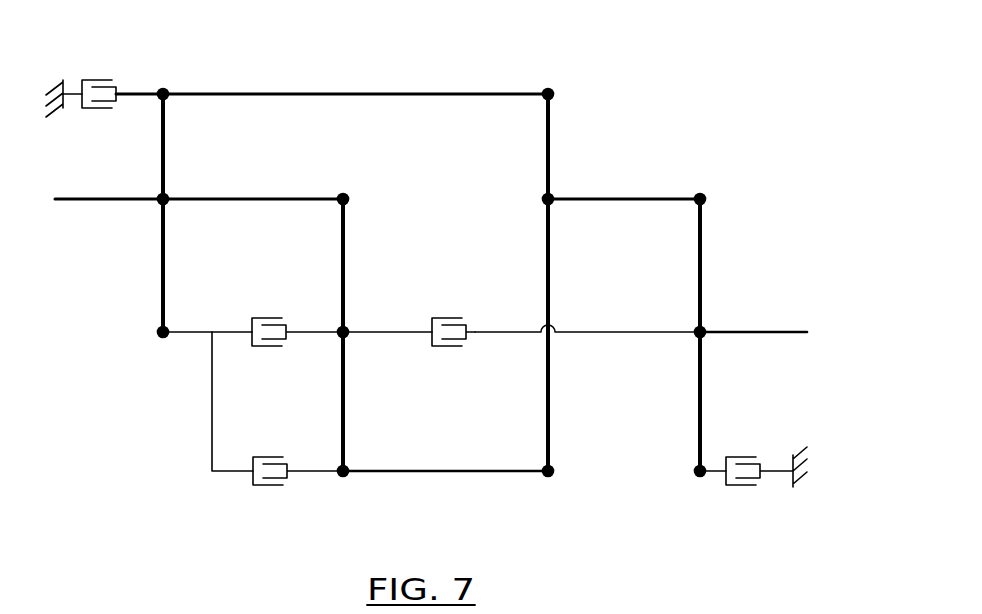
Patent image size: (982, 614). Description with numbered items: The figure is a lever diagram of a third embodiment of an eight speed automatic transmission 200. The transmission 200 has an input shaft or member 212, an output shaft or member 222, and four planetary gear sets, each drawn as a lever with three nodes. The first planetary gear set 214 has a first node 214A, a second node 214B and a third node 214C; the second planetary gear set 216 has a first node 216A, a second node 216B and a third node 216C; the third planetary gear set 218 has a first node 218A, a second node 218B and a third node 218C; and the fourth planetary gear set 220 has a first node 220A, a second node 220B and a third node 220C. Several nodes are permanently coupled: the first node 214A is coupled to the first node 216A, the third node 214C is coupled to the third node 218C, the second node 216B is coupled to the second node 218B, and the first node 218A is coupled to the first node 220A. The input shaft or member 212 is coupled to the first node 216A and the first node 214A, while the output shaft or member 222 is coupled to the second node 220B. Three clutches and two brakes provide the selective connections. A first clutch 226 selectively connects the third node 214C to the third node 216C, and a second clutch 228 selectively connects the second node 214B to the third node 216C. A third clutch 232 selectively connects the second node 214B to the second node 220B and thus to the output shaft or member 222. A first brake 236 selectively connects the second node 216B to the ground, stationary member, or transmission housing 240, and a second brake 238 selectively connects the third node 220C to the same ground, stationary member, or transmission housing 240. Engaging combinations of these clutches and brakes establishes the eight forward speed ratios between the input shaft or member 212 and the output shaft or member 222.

The eight speed automatic transmission 200 is at (729, 74).
The input shaft or member 212 is at (111, 204).
The first planetary gear set 214 is at (334, 498).
The first node of the first planetary gear set 214A is at (348, 196).
The second node of the first planetary gear set 214B is at (331, 346).
The third node of the first planetary gear set 214C is at (347, 468).
The second planetary gear set 216 is at (152, 356).
The first node of the second planetary gear set 216A is at (168, 196).
The second node of the second planetary gear set 216B is at (168, 91).
The third node of the second planetary gear set 216C is at (158, 335).
The third planetary gear set 218 is at (543, 500).
The first node of the third planetary gear set 218A is at (553, 196).
The second node of the third planetary gear set 218B is at (553, 91).
The third node of the third planetary gear set 218C is at (545, 468).
The fourth planetary gear set 220 is at (689, 500).
The first node of the fourth planetary gear set 220A is at (705, 197).
The second node of the fourth planetary gear set 220B is at (697, 331).
The third node of the fourth planetary gear set 220C is at (696, 468).
The output shaft or member 222 is at (769, 329).
The first clutch 226 is at (269, 486).
The second clutch 228 is at (274, 317).
The third clutch 232 is at (446, 317).
The first brake 236 is at (108, 80).
The second brake 238 is at (738, 456).
The ground, stationary member, or transmission housing 240 is at (66, 80).